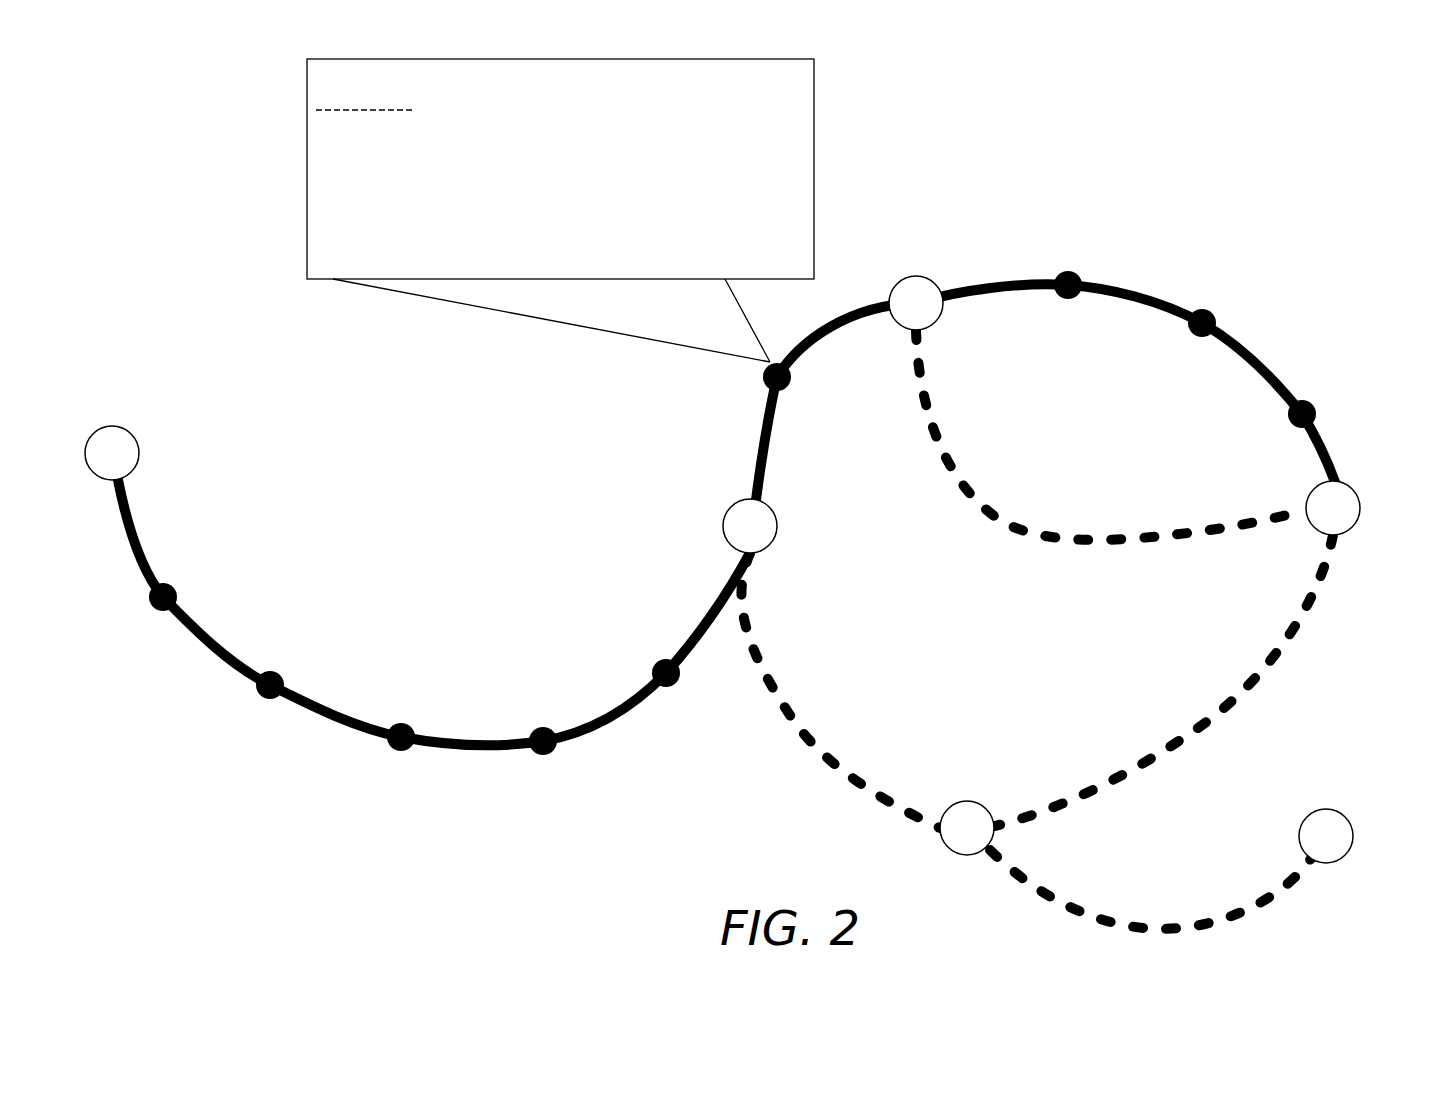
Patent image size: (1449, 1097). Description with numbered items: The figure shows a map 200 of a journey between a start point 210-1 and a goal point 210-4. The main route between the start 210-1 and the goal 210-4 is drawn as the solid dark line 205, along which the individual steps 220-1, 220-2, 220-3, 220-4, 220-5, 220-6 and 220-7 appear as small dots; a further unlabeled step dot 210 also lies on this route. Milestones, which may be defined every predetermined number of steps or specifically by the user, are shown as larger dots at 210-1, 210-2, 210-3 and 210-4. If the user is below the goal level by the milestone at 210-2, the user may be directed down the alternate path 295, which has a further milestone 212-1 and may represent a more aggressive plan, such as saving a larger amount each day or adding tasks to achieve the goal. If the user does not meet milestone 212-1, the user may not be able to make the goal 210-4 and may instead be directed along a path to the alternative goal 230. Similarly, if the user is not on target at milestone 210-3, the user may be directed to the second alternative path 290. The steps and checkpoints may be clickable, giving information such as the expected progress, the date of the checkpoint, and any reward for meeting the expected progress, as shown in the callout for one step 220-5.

The map 200 is at (1355, 97).
The solid dark line 205 is at (212, 637).
The savings step node 210 is at (556, 742).
The start point 210-1 is at (118, 426).
The milestone 210-2 is at (736, 502).
The milestone 210-3 is at (920, 276).
The goal point 210-4 is at (1352, 483).
The further milestone 212-1 is at (967, 800).
The step 220-1 is at (171, 584).
The step 220-2 is at (275, 672).
The step 220-3 is at (398, 724).
The step 220-4 is at (662, 660).
The step 220-5 is at (763, 368).
The step 220-6 is at (1070, 271).
The step 220-7 is at (1205, 309).
The alternative goal 230 is at (1341, 812).
The second alternative path 290 is at (1008, 503).
The alternate path 295 is at (943, 705).